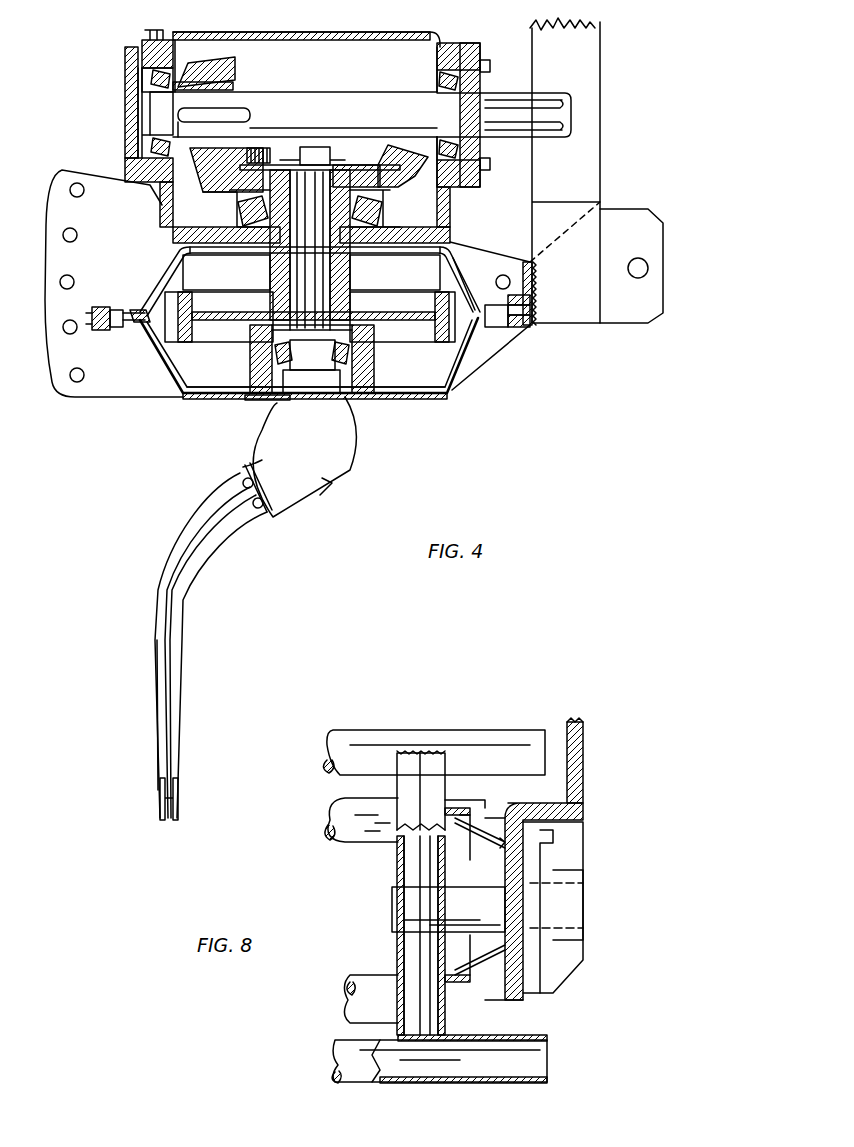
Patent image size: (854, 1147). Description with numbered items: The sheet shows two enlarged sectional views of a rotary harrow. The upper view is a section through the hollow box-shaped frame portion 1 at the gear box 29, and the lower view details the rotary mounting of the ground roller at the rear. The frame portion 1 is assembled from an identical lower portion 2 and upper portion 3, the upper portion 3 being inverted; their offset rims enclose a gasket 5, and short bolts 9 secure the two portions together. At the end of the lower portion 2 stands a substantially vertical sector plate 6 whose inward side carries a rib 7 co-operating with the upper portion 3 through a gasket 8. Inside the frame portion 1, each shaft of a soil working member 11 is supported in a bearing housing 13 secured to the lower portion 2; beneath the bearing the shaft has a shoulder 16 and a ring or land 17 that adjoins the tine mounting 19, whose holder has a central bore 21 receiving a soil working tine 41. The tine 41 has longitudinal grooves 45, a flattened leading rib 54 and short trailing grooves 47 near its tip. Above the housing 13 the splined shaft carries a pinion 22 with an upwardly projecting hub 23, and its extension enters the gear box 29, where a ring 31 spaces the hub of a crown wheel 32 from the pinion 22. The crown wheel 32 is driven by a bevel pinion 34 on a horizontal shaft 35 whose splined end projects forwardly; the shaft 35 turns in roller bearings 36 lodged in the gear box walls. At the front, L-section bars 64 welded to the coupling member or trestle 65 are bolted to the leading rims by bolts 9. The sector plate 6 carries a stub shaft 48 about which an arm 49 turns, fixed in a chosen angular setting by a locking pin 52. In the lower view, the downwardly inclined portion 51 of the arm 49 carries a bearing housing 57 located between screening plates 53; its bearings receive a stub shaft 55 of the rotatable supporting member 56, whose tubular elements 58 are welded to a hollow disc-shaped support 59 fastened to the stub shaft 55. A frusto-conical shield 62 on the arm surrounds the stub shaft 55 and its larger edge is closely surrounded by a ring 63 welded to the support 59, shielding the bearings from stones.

In FIG. 4, the hollow box-shaped frame portion 1 is at (176, 406).
In FIG. 4, the lower portion 2 is at (222, 402).
In FIG. 4, the upper portion 3 is at (170, 252).
In FIG. 4, the gasket 5 is at (130, 330).
In FIG. 4, the sector plate 6 is at (75, 175).
In FIG. 4, the rib 7 is at (452, 258).
In FIG. 4, the gasket 8 is at (462, 256).
In FIG. 4, the bolt 9 is at (108, 307).
In FIG. 4, the soil working member 11 is at (235, 471).
In FIG. 4, the bearing housing 13 is at (250, 360).
In FIG. 4, the shoulder 16 is at (320, 397).
In FIG. 4, the ring or land 17 is at (275, 400).
In FIG. 4, the tine mounting 19 is at (376, 446).
In FIG. 4, the central bore 21 is at (310, 250).
In FIG. 4, the pinion 22 is at (205, 310).
In FIG. 4, the hub 23 is at (235, 215).
In FIG. 4, the gear box 29 is at (308, 40).
In FIG. 4, the ring 31 is at (365, 270).
In FIG. 4, the crown wheel 32 is at (398, 155).
In FIG. 4, the bevel pinion 34 is at (205, 80).
In FIG. 4, the shaft 35 is at (293, 100).
In FIG. 4, the roller bearing 36 is at (158, 77).
In FIG. 4, the soil working tine 41 is at (148, 618).
In FIG. 4, the groove 45 is at (262, 478).
In FIG. 4, the trailing groove 47 is at (160, 806).
In FIG. 4, the stub shaft 48 is at (505, 275).
In FIG. 8, the arm 49 is at (588, 716).
In FIG. 8, the downwardly inclined portion 51 is at (580, 778).
In FIG. 4, the locking pin 52 is at (84, 193).
In FIG. 8, the screening plate 53 is at (580, 834).
In FIG. 4, the rib 54 is at (165, 695).
In FIG. 8, the stub shaft 55 is at (392, 903).
In FIG. 8, the rotatable supporting member 56 is at (365, 722).
In FIG. 8, the bearing housing 57 is at (535, 915).
In FIG. 8, the tubular element 58 is at (335, 787).
In FIG. 8, the disc-shaped support 59 is at (420, 745).
In FIG. 8, the frusto-conical shield 62 is at (478, 870).
In FIG. 8, the ring 63 is at (472, 800).
In FIG. 4, the bar of L-shaped cross-section 64 is at (532, 286).
In FIG. 4, the coupling member or trestle 65 is at (592, 15).